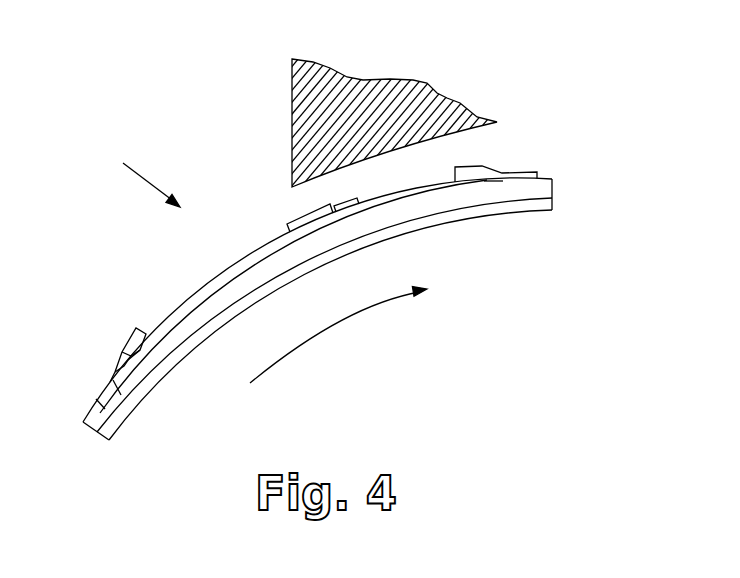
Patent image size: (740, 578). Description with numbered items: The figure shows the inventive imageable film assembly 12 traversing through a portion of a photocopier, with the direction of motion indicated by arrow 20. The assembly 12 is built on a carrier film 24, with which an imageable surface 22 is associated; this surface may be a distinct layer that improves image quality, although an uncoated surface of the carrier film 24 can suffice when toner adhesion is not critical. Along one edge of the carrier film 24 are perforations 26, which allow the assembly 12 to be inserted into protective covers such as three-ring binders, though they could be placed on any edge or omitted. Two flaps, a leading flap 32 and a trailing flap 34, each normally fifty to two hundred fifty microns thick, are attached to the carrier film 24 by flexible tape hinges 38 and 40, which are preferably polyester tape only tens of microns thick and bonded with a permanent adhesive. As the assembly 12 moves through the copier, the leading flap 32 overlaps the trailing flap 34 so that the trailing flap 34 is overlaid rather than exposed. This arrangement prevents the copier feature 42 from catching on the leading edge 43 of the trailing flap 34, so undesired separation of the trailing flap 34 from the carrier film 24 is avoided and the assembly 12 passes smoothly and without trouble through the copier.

The imageable film assembly 12 is at (134, 174).
The arrow 20 is at (330, 327).
The imageable surface 22 is at (463, 213).
The carrier film 24 is at (540, 183).
The perforations 26 is at (110, 417).
The leading flap 32 is at (303, 219).
The trailing flap 34 is at (220, 279).
The flexible tape hinge 38 is at (119, 356).
The flexible tape hinge 40 is at (494, 166).
The copier feature 42 is at (378, 82).
The leading edge of trailing flap 43 is at (344, 218).